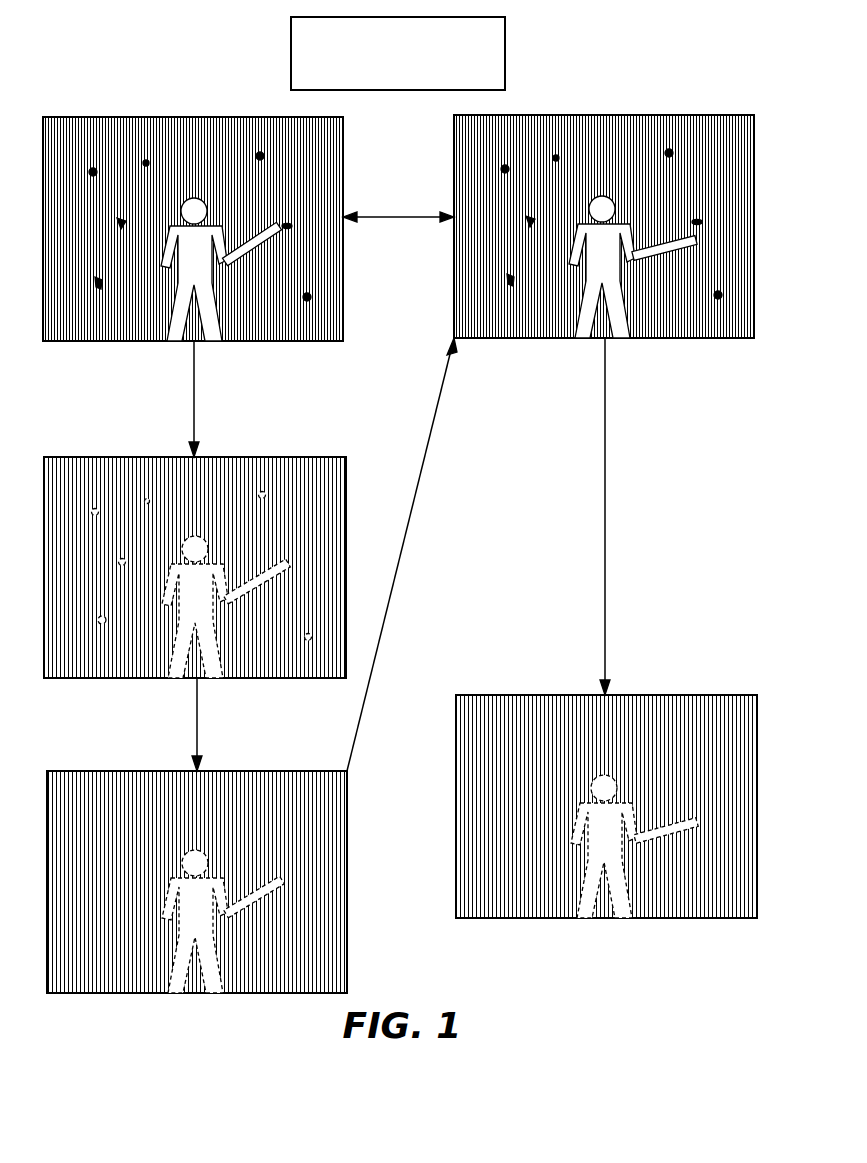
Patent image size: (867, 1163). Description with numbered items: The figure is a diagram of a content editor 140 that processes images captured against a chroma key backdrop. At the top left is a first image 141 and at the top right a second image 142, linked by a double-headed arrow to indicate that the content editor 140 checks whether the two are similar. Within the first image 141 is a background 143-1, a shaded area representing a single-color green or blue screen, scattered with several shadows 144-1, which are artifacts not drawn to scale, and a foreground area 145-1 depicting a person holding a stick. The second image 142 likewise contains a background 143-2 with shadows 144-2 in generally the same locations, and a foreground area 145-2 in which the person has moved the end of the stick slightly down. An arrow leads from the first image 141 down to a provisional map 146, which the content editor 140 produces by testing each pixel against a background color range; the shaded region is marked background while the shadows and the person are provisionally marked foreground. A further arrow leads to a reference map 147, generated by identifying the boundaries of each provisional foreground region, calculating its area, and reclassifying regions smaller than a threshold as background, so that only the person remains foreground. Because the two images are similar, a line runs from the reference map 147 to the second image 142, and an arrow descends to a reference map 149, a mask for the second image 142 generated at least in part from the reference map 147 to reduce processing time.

The content editor 140 is at (398, 53).
The first image 141 is at (112, 117).
The second image 142 is at (670, 115).
The background 143-1 is at (218, 151).
The background 143-2 is at (628, 145).
The shadows 144-1 is at (309, 296).
The shadows 144-2 is at (718, 294).
The foreground area 145-1 is at (192, 251).
The foreground area 145-2 is at (600, 250).
The provisional map 146 is at (115, 457).
The reference map 147 is at (110, 771).
The reference map 149 is at (686, 695).